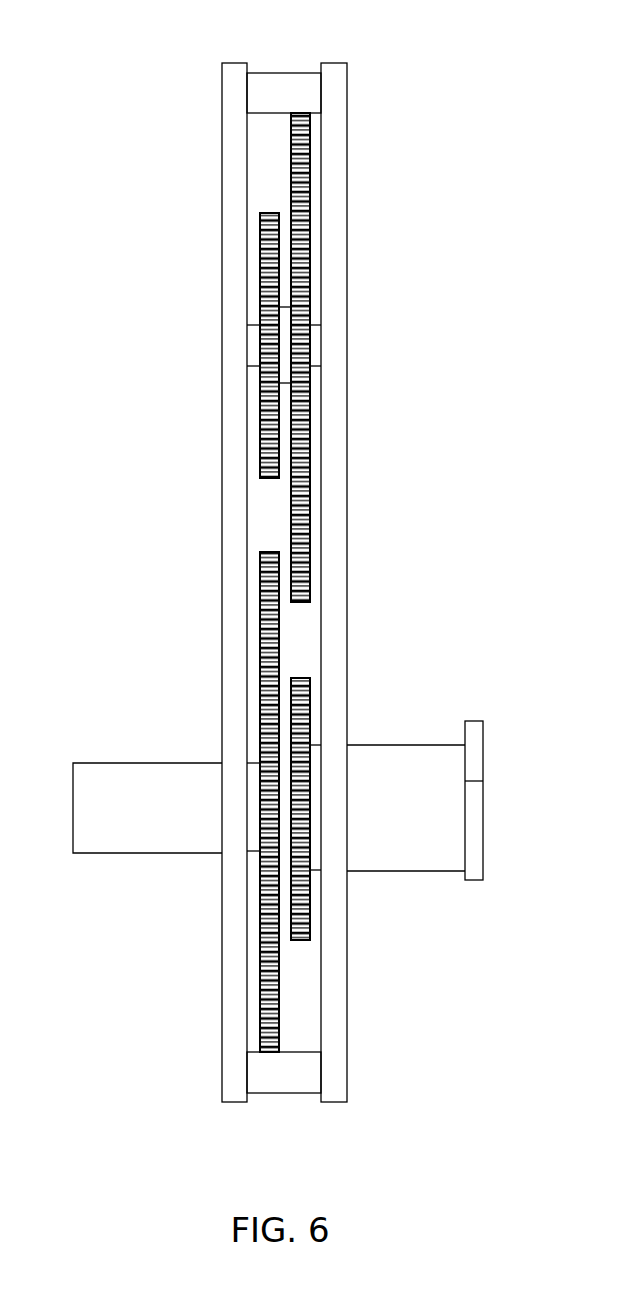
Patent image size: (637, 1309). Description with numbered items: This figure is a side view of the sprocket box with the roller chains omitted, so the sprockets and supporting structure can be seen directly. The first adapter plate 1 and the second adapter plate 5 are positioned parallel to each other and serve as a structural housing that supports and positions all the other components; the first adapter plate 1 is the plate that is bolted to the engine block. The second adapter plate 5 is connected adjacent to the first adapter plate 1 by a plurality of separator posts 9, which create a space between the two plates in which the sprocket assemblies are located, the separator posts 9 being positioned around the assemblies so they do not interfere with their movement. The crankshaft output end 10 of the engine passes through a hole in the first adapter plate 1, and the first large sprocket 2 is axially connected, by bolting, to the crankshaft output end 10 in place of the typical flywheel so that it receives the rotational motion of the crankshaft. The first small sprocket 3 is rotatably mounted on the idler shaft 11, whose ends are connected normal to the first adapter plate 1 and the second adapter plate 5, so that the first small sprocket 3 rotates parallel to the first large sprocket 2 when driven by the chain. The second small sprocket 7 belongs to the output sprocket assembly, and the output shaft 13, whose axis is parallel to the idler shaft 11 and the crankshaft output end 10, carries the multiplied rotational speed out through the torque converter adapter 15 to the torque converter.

The first adapter plate 1 is at (230, 294).
The first large sprocket 2 is at (278, 992).
The first small sprocket 3 is at (270, 470).
The second adapter plate 5 is at (340, 497).
The second small sprocket 7 is at (294, 158).
The separator posts 9 is at (288, 80).
The crankshaft output end 10 is at (107, 775).
The idler shaft 11 is at (318, 343).
The output shaft 13 is at (383, 862).
The torque converter adapter 15 is at (475, 815).